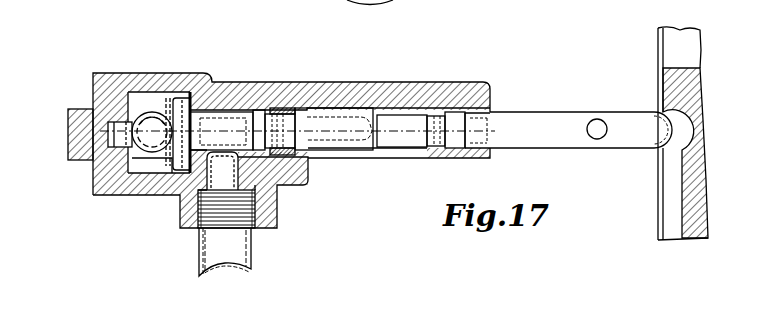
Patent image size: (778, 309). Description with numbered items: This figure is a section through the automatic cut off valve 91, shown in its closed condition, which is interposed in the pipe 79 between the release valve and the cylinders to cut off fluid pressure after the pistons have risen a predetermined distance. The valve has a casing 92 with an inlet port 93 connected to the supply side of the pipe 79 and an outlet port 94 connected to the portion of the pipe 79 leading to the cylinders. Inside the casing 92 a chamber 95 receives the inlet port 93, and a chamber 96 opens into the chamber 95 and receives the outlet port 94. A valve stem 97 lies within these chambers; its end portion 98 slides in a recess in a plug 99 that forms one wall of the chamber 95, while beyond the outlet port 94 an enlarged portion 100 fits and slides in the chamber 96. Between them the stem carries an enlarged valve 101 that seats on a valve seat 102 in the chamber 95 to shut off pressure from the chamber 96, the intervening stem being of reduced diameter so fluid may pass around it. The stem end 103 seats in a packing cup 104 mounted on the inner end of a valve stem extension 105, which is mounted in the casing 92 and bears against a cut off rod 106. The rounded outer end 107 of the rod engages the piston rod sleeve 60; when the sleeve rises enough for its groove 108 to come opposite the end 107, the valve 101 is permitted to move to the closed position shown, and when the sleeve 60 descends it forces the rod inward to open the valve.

The hollow sleeve part 60 is at (682, 223).
The pipe 79 is at (238, 247).
The automatic cut off valve 91 is at (298, 118).
The casing 92 is at (348, 84).
The inlet port 93 is at (147, 117).
The outlet port 94 is at (217, 187).
The chamber 95 is at (157, 108).
The chamber 96 is at (236, 116).
The valve stem 97 is at (207, 130).
The end portion 98 is at (130, 135).
The plug 99 is at (68, 126).
The enlarged portion 100 is at (278, 135).
The valve 101 is at (173, 142).
The valve seat 102 is at (182, 206).
The end of the stem 103 is at (296, 143).
The packing cup 104 is at (283, 108).
The valve stem extension 105 is at (387, 130).
The cut off rod 106 is at (497, 128).
The outer end 107 is at (672, 128).
The groove 108 is at (678, 194).